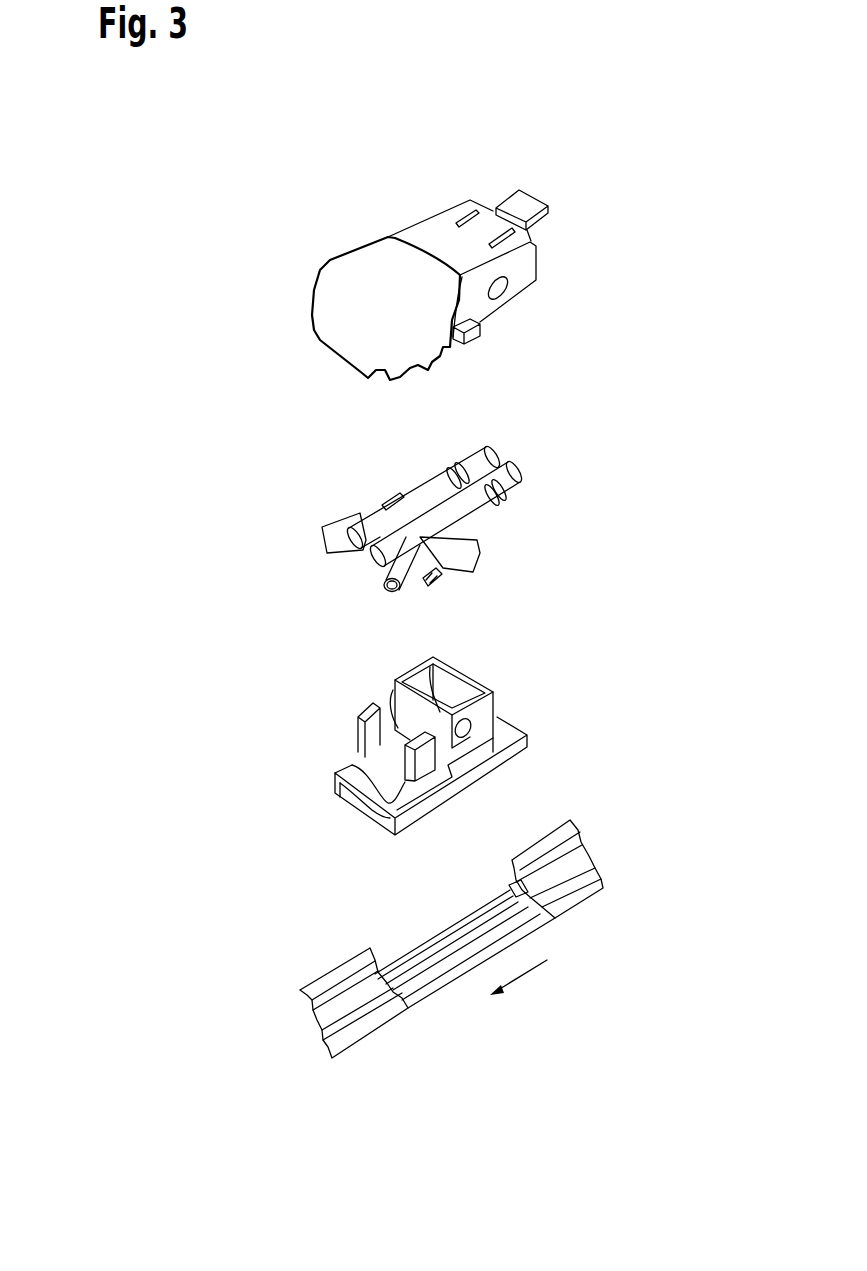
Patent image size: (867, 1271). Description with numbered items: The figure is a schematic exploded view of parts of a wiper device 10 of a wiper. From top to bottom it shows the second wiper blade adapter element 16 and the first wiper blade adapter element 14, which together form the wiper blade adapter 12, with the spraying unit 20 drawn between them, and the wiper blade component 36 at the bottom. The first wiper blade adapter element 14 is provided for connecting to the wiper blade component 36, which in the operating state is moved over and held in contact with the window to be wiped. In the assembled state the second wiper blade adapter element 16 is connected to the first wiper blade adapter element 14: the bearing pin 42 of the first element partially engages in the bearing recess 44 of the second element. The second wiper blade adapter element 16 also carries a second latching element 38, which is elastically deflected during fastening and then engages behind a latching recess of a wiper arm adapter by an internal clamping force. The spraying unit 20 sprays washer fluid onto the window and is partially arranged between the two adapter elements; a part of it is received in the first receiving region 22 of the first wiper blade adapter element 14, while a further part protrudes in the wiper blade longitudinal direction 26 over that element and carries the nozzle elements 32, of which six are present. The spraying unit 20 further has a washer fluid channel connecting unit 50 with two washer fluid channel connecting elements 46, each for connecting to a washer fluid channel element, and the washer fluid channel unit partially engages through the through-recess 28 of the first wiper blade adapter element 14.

The wiper device 10 is at (579, 192).
The wiper blade adapter 12 is at (290, 249).
The first wiper blade adapter element 14 is at (513, 754).
The second wiper blade adapter element 16 is at (367, 268).
The spraying unit 20 is at (536, 463).
The first receiving region 22 is at (368, 787).
The wiper blade longitudinal direction 26 is at (525, 975).
The through-recess 28 is at (440, 684).
The nozzle element 32 is at (334, 534).
The wiper blade component 36 is at (433, 1015).
The second latching element 38 is at (519, 205).
The bearing pin 42 is at (490, 728).
The bearing recess 44 is at (505, 299).
The washer fluid channel connecting element 46 is at (500, 490).
The washer fluid channel connecting unit 50 is at (536, 496).